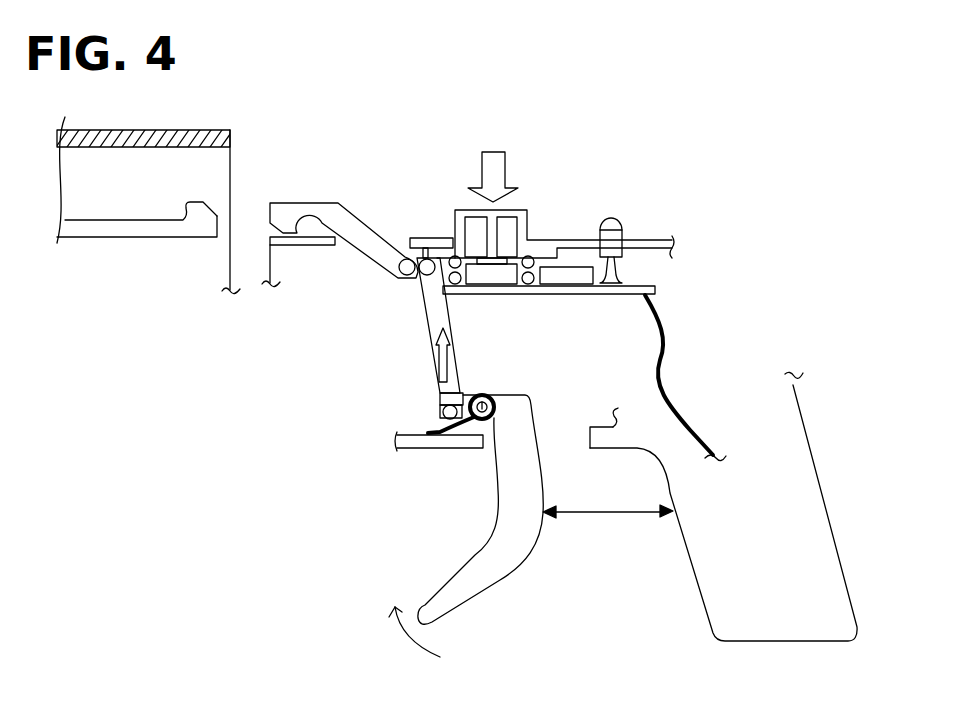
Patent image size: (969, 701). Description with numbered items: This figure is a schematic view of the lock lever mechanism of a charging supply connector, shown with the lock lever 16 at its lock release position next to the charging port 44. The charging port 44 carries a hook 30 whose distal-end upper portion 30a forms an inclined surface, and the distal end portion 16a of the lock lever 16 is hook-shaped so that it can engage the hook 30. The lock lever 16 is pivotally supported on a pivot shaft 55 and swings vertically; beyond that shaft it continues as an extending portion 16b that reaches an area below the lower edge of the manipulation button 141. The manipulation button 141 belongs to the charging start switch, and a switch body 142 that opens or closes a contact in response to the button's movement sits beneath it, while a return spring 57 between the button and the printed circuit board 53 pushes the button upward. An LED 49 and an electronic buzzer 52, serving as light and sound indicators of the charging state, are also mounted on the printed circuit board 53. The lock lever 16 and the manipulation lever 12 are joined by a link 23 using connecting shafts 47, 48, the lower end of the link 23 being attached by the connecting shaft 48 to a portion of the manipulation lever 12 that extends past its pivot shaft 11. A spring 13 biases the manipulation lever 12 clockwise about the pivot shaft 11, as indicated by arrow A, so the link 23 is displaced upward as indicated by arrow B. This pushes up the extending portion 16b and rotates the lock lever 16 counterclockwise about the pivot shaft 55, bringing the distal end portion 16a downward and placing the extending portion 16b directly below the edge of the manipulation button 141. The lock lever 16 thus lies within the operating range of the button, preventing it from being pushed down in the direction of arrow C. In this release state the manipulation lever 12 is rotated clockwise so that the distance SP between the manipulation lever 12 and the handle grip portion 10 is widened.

The charging port 44 is at (190, 130).
The hook 30 is at (93, 228).
The distal-end upper portion of the hook 30a is at (192, 228).
The lock lever 16 is at (347, 217).
The distal end portion of the lock lever 16a is at (290, 217).
The extending portion of the lock lever 16b is at (449, 209).
The manipulation button 141 is at (520, 222).
The switch body 142 is at (490, 294).
The connecting shaft 47 is at (425, 258).
The pivot shaft 55 is at (403, 258).
The return spring 57 is at (527, 294).
The electronic buzzer 52 is at (572, 285).
The printed circuit board 53 is at (660, 290).
The LED 49 is at (613, 224).
The link 23 is at (430, 300).
The connecting shaft 48 is at (440, 412).
The pivot shaft 11 is at (487, 397).
The spring 13 is at (473, 450).
The manipulation lever 12 is at (482, 586).
The handle grip portion 10 is at (800, 478).
The arrow A is at (415, 643).
The arrow B is at (437, 358).
The arrow C is at (498, 165).
The distance SP is at (585, 510).